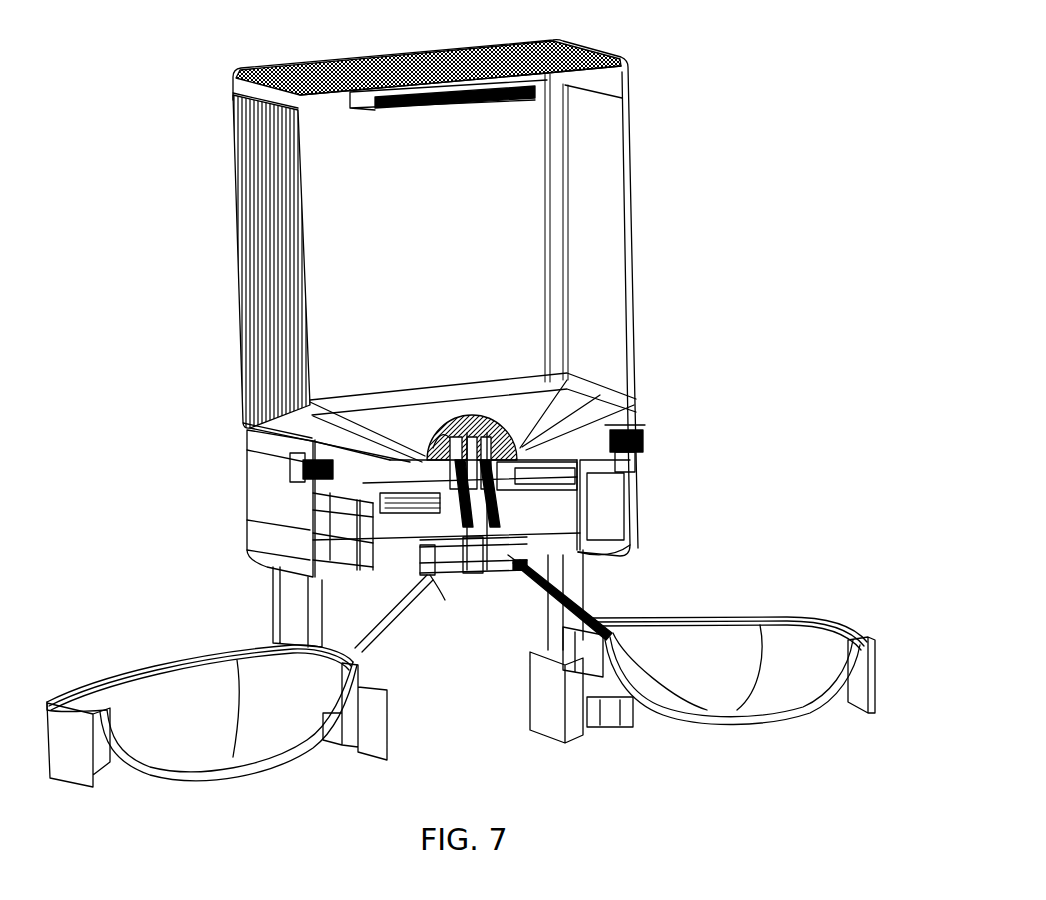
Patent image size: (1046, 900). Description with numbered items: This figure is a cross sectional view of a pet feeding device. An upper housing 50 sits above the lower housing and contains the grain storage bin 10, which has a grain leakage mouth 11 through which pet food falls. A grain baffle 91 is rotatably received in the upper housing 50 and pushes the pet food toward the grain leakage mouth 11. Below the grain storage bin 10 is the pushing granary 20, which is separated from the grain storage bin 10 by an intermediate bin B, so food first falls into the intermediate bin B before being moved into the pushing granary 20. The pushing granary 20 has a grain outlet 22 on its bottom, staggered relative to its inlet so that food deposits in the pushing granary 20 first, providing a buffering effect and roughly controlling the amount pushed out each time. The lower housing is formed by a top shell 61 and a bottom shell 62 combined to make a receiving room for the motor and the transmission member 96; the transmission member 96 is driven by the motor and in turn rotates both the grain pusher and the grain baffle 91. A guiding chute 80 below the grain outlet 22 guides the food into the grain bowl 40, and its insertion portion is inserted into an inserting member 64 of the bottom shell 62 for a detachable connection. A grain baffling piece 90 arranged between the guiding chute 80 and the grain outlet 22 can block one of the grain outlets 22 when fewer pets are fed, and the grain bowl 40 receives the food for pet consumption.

The grain storage bin 10 is at (453, 327).
The upper housing 50 is at (603, 308).
The grain leakage mouth 11 is at (400, 450).
The grain baffle 91 is at (425, 438).
The intermediate bin B is at (538, 440).
The grain outlet 22 is at (357, 525).
The pushing granary 20 is at (290, 463).
The transmission member 96 is at (577, 518).
The bottom shell 62 is at (560, 548).
The top shell 61 is at (535, 473).
The inserting member 64 is at (433, 575).
The guiding chute 80 is at (390, 620).
The grain bowl 40 is at (647, 633).
The grain baffling piece 90 is at (617, 727).